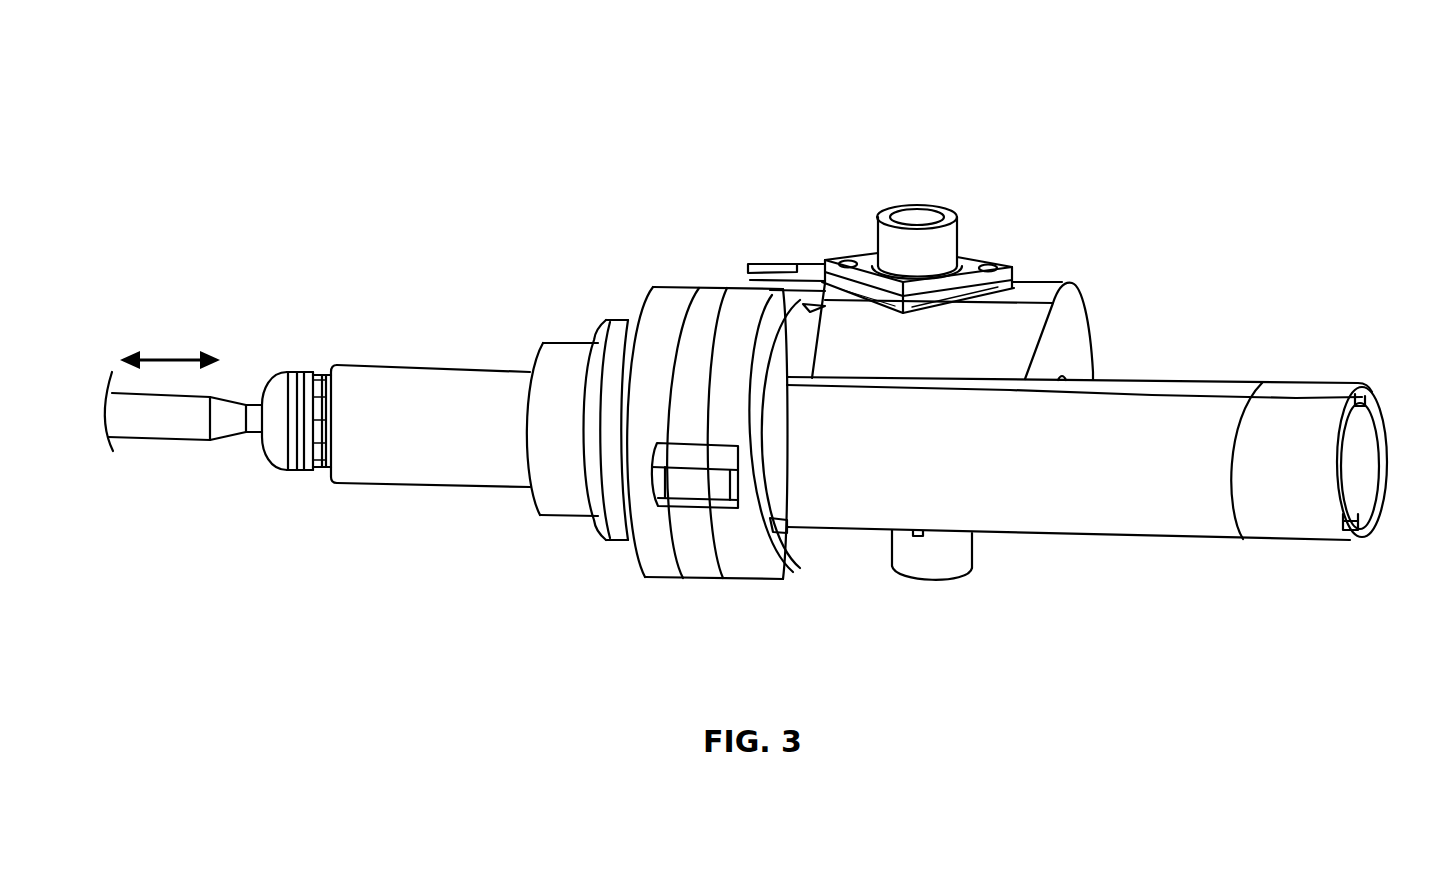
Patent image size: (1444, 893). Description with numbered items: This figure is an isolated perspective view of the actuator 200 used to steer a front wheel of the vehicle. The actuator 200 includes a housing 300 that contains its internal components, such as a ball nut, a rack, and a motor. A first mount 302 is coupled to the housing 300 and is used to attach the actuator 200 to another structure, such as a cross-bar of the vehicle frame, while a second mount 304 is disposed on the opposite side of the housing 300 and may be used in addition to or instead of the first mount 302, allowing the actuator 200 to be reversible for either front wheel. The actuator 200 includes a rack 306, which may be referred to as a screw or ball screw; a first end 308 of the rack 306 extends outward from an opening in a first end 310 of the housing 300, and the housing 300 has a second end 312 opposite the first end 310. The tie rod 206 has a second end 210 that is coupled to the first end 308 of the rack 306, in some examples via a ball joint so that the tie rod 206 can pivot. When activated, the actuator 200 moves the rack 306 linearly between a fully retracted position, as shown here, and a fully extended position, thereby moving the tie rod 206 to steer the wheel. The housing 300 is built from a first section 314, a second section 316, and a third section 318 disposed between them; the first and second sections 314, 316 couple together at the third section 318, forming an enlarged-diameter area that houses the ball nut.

The actuator 200 is at (362, 105).
The tie rod 206 is at (175, 420).
The second end 210 is at (250, 442).
The housing 300 is at (570, 357).
The first mount 302 is at (947, 202).
The second mount 304 is at (937, 570).
The rack 306 is at (316, 372).
The first end 308 is at (249, 398).
The first end 310 is at (318, 376).
The second end 312 is at (1377, 395).
The first section 314 is at (437, 397).
The second section 316 is at (1165, 412).
The third section 318 is at (722, 310).